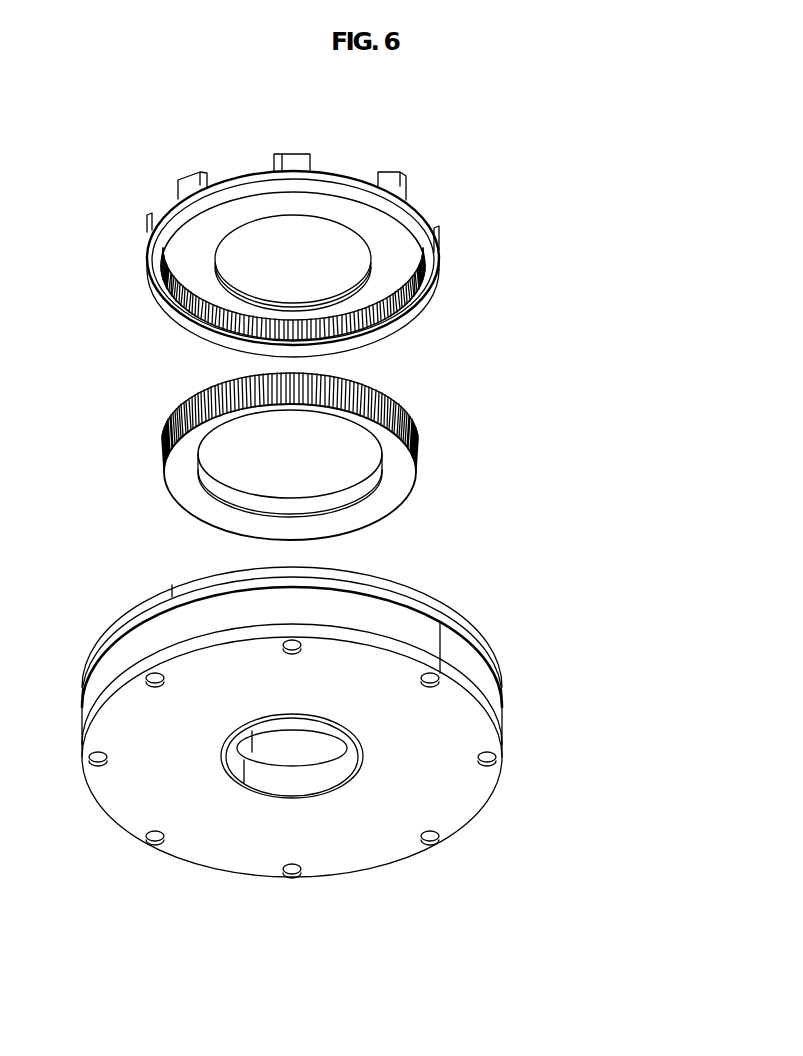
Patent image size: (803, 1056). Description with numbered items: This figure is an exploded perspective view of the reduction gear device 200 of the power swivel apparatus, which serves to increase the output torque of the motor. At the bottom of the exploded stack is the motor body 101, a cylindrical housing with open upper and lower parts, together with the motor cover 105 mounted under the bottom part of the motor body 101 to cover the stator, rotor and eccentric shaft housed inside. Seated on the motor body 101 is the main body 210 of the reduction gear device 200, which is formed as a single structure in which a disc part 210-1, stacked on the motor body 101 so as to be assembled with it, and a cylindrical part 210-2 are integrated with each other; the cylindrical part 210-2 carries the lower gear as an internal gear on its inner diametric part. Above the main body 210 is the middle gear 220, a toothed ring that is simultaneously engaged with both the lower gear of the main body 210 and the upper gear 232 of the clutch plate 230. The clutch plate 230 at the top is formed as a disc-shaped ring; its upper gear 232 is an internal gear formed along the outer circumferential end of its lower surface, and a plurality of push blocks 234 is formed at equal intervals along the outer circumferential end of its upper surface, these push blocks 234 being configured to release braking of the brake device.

The reduction gear device 200 is at (504, 278).
The clutch plate 230 is at (153, 297).
The upper gear 232 is at (402, 313).
The push blocks 234 is at (398, 183).
The middle gear 220 is at (422, 457).
The main body 210 is at (638, 583).
The disc part 210-1 is at (452, 622).
The cylindrical part 210-2 is at (420, 593).
The motor body 101 is at (490, 693).
The motor cover 105 is at (482, 785).